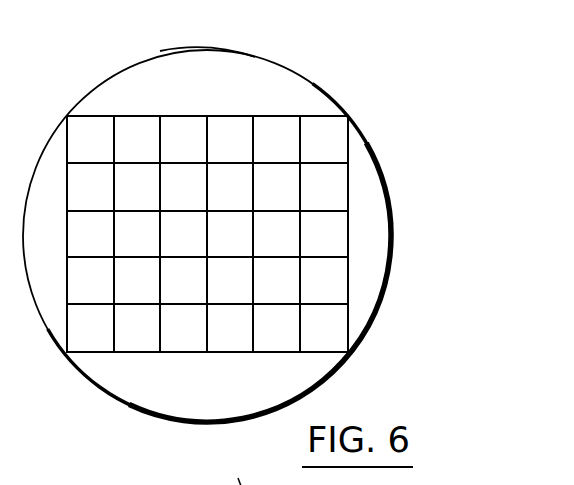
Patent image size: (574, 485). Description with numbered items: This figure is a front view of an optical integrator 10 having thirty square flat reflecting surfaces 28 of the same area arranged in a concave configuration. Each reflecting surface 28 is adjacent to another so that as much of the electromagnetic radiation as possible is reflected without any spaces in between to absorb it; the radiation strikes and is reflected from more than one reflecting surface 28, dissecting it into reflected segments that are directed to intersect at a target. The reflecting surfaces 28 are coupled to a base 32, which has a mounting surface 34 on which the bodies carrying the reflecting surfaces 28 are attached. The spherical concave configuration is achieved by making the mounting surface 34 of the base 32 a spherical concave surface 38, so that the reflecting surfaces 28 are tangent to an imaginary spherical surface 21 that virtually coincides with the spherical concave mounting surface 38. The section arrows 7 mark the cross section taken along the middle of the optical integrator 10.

The optical integrator 10 is at (334, 90).
The base 32 is at (370, 193).
The reflecting surfaces 28 is at (148, 197).
The spherical concave surface 38 is at (148, 79).
The mounting surface 34 is at (120, 105).
The cross section line for FIG. 7 is at (207, 38).
The imaginary spherical surface 21 is at (178, 484).